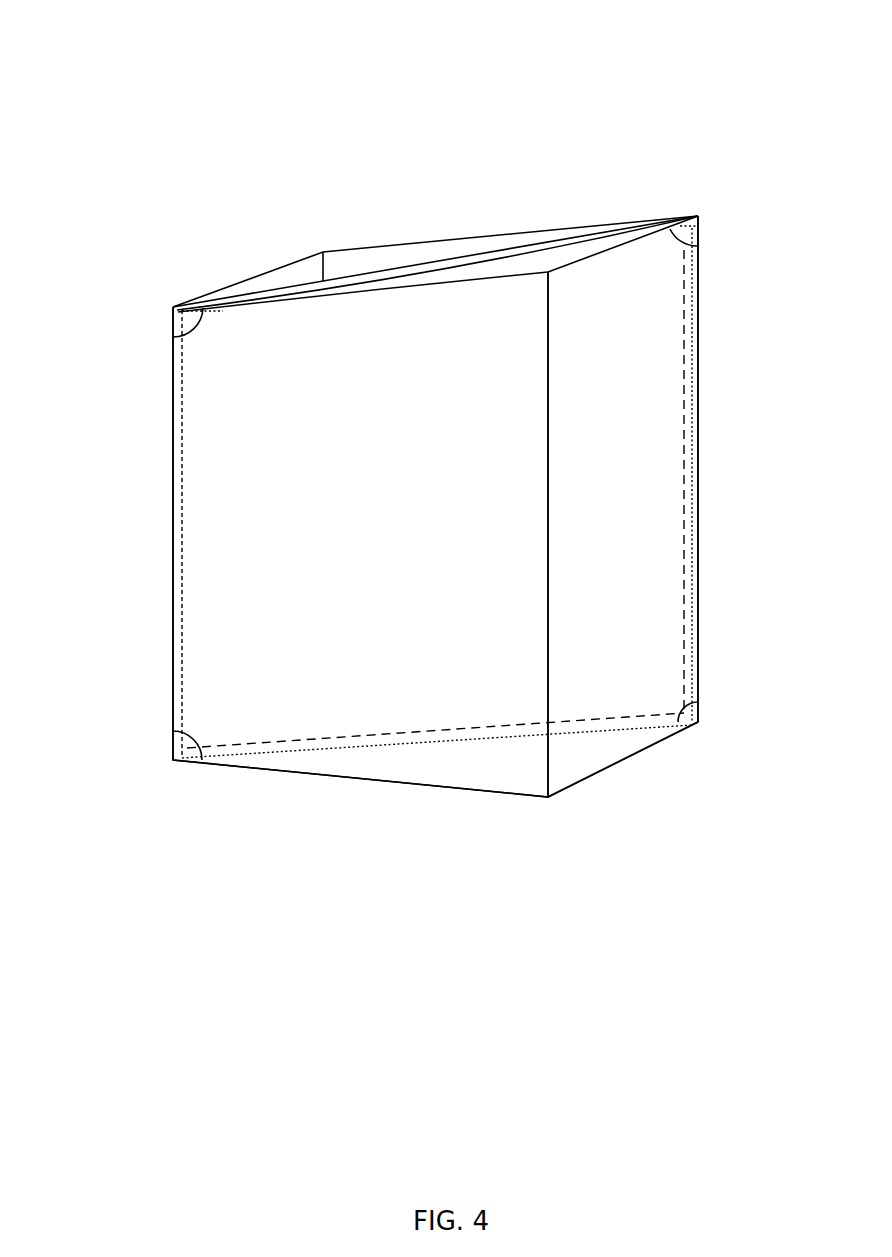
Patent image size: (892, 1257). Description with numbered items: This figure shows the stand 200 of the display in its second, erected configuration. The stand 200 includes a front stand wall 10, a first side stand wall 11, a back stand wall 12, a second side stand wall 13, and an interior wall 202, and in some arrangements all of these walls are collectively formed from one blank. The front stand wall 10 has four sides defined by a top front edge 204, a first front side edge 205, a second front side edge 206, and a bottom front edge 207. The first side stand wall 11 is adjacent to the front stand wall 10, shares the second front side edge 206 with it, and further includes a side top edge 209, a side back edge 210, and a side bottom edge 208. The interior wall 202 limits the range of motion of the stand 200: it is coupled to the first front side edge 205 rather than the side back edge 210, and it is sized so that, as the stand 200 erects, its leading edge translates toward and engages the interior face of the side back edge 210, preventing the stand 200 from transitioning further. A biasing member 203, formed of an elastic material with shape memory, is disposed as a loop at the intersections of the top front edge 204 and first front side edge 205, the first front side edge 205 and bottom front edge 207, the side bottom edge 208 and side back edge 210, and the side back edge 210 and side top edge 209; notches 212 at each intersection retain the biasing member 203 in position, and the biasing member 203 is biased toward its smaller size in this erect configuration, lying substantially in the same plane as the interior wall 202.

The stand 200 is at (58, 64).
The front stand wall 10 is at (616, 469).
The first side stand wall 11 is at (375, 471).
The back stand wall 12 is at (300, 278).
The second side stand wall 13 is at (408, 252).
The interior wall 202 is at (367, 735).
The biasing member 203 is at (455, 737).
The top front edge 204 is at (583, 258).
The first front side edge 205 is at (700, 615).
The second front side edge 206 is at (548, 553).
The bottom front edge 207 is at (625, 762).
The side bottom edge 208 is at (350, 777).
The side top edge 209 is at (463, 282).
The side back edge 210 is at (172, 453).
The notches 212 is at (192, 323).